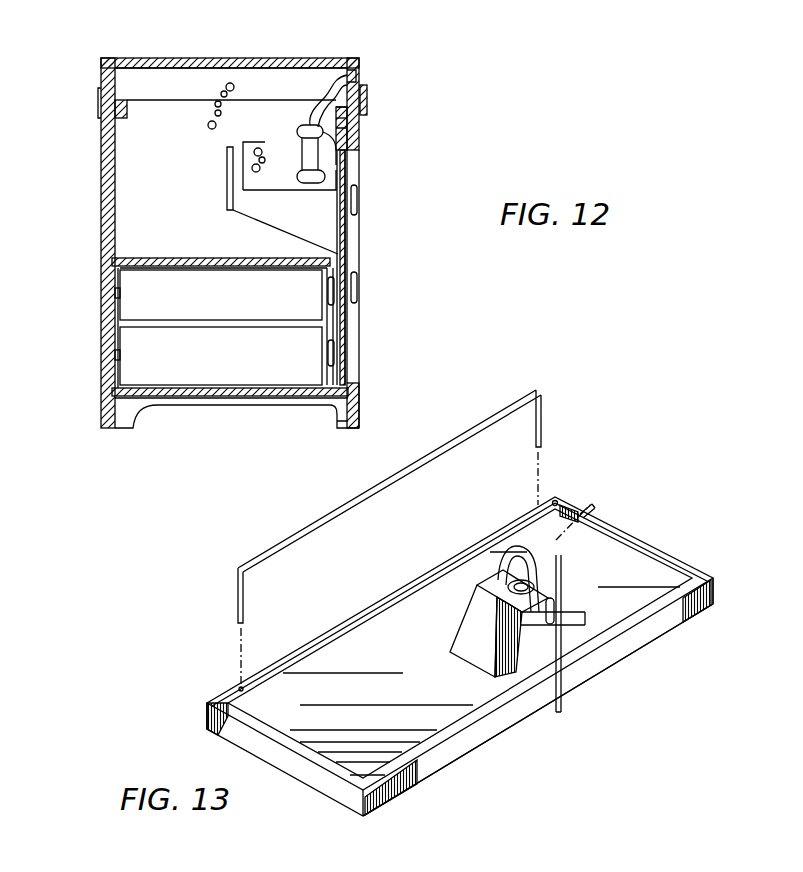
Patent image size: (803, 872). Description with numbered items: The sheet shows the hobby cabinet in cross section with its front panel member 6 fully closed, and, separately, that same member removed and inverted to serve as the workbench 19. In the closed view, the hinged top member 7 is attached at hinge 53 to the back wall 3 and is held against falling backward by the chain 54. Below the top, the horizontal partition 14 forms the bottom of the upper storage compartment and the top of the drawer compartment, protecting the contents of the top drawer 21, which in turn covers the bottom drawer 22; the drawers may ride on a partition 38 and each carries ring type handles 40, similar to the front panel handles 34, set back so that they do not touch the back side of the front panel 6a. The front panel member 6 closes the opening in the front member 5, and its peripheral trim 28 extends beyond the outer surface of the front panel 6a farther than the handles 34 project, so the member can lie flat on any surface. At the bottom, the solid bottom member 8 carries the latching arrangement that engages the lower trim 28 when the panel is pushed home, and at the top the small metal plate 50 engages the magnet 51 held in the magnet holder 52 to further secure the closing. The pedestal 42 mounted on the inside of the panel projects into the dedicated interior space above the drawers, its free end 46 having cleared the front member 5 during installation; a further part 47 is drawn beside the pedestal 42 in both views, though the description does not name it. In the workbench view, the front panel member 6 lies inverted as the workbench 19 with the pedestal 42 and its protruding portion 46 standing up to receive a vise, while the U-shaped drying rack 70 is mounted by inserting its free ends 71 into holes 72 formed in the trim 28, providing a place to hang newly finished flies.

In FIG. 12, the back wall 3 is at (100, 172).
In FIG. 12, the front member 5 is at (367, 123).
In FIG. 12, the front panel member 6 is at (368, 144).
In FIG. 13, the front panel member 6 is at (630, 660).
In FIG. 12, the front panel 6a is at (347, 357).
In FIG. 13, the front panel 6a is at (236, 698).
In FIG. 12, the top member 7 is at (106, 55).
In FIG. 12, the bottom member 8 is at (220, 405).
In FIG. 12, the horizontal partition 14 is at (142, 258).
In FIG. 13, the workbench 19 is at (619, 518).
In FIG. 12, the top drawer 21 is at (143, 303).
In FIG. 12, the bottom drawer 22 is at (147, 365).
In FIG. 12, the peripheral trim 28 is at (358, 378).
In FIG. 13, the peripheral trim 28 is at (686, 595).
In FIG. 12, the front panel handles 34 is at (362, 272).
In FIG. 12, the partition 38 is at (178, 398).
In FIG. 12, the ring type handles 40 is at (347, 306).
In FIG. 12, the pedestal 42 is at (358, 200).
In FIG. 13, the pedestal 42 is at (483, 653).
In FIG. 12, the free end of the pedestal 46 is at (288, 128).
In FIG. 13, the free end of the pedestal 46 is at (512, 680).
In FIG. 12, the latch bracket 47 is at (236, 146).
In FIG. 13, the latch bracket 47 is at (492, 590).
In FIG. 12, the small metal plate 50 is at (363, 126).
In FIG. 12, the magnet 51 is at (367, 92).
In FIG. 12, the magnet holder 52 is at (362, 77).
In FIG. 12, the hinge 53 is at (99, 100).
In FIG. 12, the chain 54 is at (219, 99).
In FIG. 13, the U-shaped drying rack 70 is at (541, 389).
In FIG. 13, the free ends of the rack 71 is at (541, 423).
In FIG. 13, the holes 72 is at (554, 495).